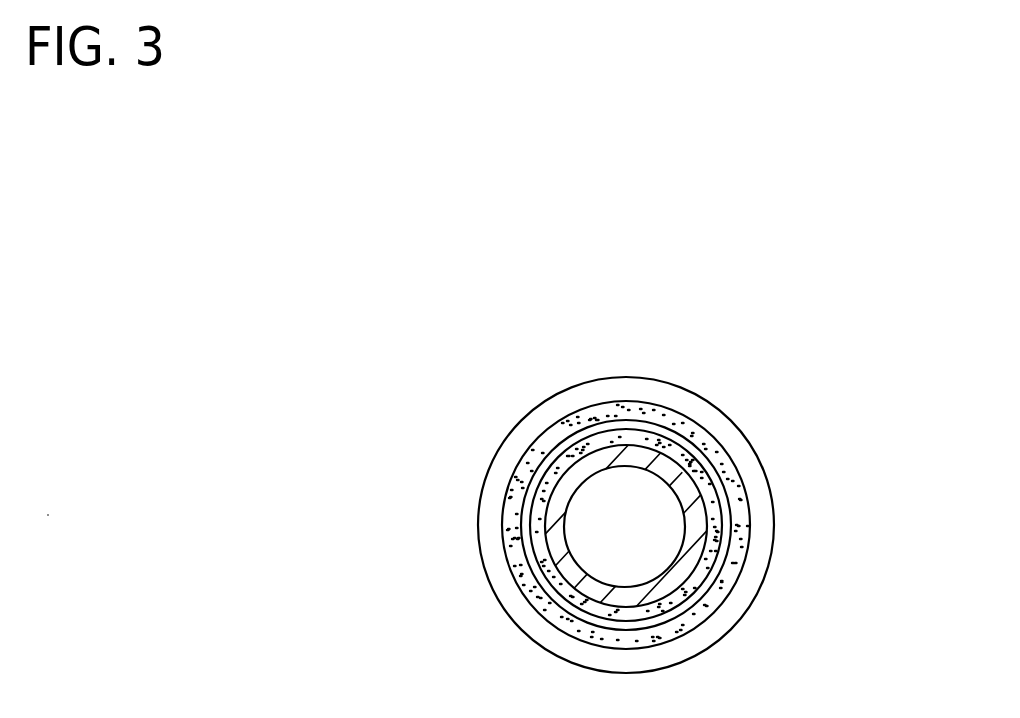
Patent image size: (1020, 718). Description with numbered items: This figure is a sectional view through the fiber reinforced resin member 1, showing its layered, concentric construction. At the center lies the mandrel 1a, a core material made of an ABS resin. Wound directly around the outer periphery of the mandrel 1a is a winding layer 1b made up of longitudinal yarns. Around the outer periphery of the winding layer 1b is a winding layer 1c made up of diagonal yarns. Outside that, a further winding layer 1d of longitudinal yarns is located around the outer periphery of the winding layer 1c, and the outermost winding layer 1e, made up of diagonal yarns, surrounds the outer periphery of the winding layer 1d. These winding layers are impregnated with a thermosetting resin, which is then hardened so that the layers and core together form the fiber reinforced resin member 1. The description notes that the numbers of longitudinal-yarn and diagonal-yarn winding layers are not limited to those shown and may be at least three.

The fiber reinforced resin member 1 is at (606, 461).
The mandrel 1a is at (571, 471).
The winding layer 1b is at (675, 452).
The winding layer 1c is at (730, 515).
The winding layer 1d is at (723, 592).
The winding layer 1e is at (493, 557).